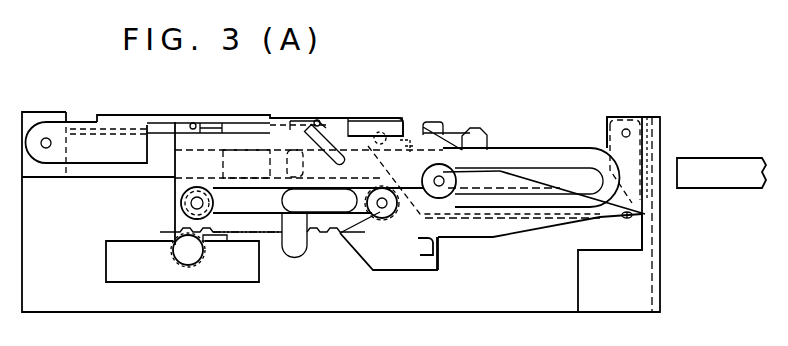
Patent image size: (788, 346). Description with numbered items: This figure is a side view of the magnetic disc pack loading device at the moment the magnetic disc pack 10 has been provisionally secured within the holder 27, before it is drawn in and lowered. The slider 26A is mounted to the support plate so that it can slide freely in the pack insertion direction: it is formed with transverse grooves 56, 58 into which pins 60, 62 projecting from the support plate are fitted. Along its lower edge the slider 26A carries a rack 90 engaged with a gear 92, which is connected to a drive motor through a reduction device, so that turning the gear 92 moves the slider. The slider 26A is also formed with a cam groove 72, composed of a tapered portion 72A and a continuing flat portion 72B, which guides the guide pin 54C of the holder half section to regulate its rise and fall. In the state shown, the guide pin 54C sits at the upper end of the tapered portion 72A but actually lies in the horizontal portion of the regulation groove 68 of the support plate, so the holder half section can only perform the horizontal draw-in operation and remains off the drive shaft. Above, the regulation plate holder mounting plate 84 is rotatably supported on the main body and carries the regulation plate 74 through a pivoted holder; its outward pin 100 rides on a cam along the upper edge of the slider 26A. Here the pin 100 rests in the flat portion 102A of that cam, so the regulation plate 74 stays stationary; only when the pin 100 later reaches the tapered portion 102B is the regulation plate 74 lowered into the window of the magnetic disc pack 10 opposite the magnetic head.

The magnetic disc pack 10 is at (715, 160).
The slider 26A is at (460, 226).
The holder 27 is at (585, 145).
The guide pin 54C is at (380, 218).
The transverse groove 56 is at (531, 168).
The transverse groove 58 is at (265, 205).
The pin 60 is at (439, 181).
The pin 62 is at (181, 203).
The regulation groove 68 is at (322, 236).
The cam groove 72 is at (400, 236).
The tapered portion 72A is at (378, 214).
The flat portion 72B is at (437, 250).
The regulation plate 74 is at (362, 138).
The regulation plate holder mounting plate 84 is at (114, 118).
The rack 90 is at (240, 258).
The gear 92 is at (190, 258).
The pin 100 is at (193, 122).
The flat portion 102A is at (222, 135).
The tapered portion 102B is at (318, 130).